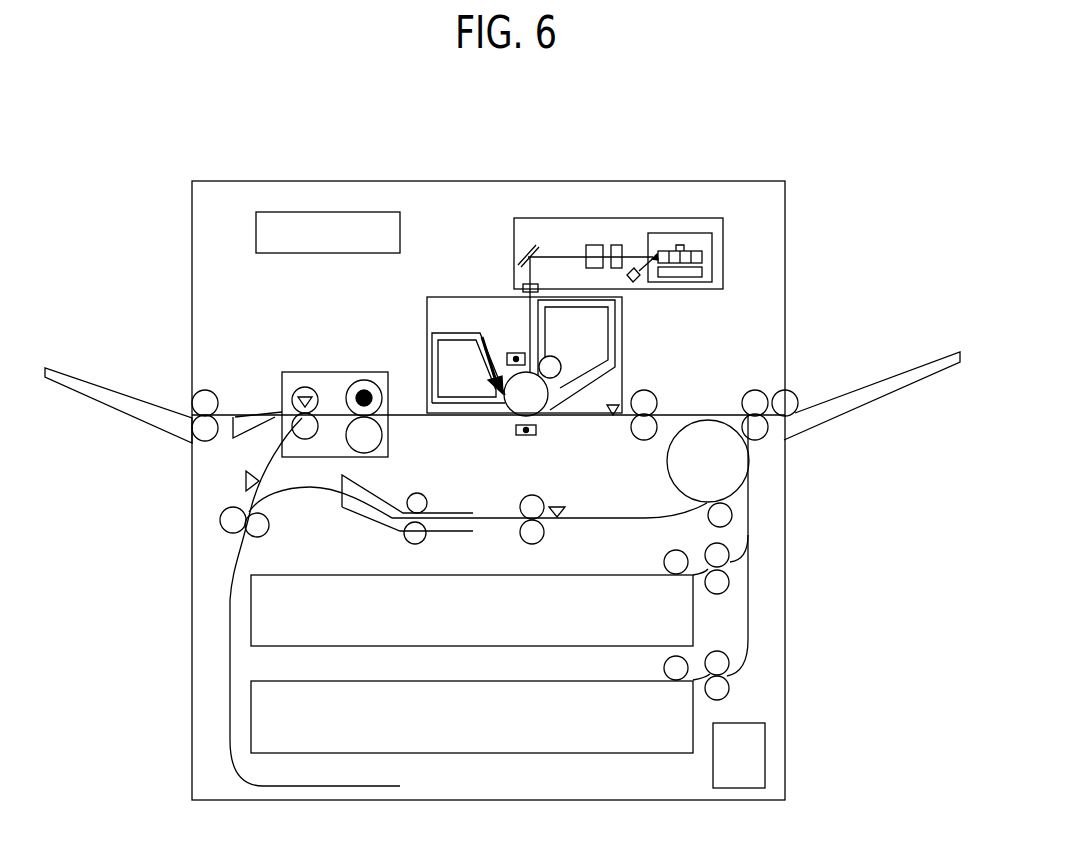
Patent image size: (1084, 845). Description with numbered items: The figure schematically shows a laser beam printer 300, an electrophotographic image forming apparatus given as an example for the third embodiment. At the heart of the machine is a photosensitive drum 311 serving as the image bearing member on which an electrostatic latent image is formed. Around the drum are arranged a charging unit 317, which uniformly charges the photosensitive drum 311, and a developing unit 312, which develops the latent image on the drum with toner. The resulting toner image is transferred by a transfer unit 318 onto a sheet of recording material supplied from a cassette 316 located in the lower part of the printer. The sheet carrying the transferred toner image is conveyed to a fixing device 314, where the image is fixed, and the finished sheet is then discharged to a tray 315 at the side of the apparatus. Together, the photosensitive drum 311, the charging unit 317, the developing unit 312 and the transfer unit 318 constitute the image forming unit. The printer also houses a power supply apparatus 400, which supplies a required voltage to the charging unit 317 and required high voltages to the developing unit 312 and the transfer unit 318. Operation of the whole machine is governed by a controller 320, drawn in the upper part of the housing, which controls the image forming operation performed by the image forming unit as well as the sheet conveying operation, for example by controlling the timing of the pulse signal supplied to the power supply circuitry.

The laser beam printer 300 is at (670, 181).
The photosensitive drum 311 is at (535, 398).
The developing unit 312 is at (558, 366).
The fixing device 314 is at (335, 372).
The tray 315 is at (103, 395).
The cassette 316 is at (675, 733).
The charging unit 317 is at (510, 352).
The transfer unit 318 is at (536, 430).
The controller 320 is at (303, 255).
The power supply apparatus 400 is at (710, 757).